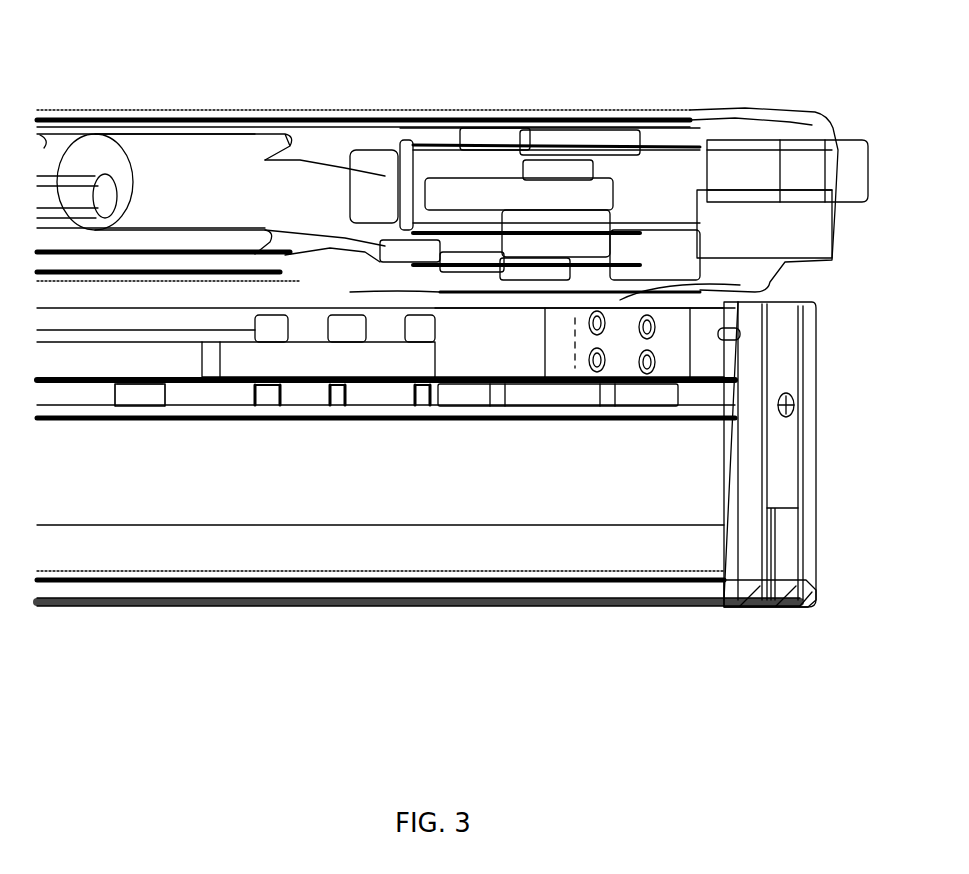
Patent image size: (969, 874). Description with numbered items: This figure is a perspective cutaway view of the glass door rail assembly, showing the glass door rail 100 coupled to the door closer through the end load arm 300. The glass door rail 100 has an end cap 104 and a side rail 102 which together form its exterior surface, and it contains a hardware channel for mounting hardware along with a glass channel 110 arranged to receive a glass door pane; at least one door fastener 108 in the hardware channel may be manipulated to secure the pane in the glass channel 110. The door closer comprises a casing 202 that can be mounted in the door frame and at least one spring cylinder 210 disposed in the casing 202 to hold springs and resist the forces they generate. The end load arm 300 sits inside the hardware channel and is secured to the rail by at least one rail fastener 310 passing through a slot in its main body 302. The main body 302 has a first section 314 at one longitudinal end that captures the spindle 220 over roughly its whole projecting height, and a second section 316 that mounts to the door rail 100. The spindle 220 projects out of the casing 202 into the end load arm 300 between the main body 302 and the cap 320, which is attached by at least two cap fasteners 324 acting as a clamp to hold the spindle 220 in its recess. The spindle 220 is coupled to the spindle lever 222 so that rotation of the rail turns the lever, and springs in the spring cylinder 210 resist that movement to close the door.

The glass door rail 100 is at (256, 630).
The side rail 102 is at (666, 486).
The end cap 104 is at (790, 448).
The door fastener 108 is at (345, 316).
The glass channel 110 is at (818, 596).
The casing 202 is at (776, 122).
The spring cylinder 210 is at (160, 195).
The spindle 220 is at (560, 292).
The upper bracket 222 is at (450, 190).
The end load arm 300 is at (148, 359).
The main body 302 is at (480, 393).
The rail fastener 310 is at (260, 332).
The first section 314 is at (509, 362).
The second section 316 is at (336, 372).
The cap 320 is at (690, 280).
The cap fasteners 324 is at (606, 360).